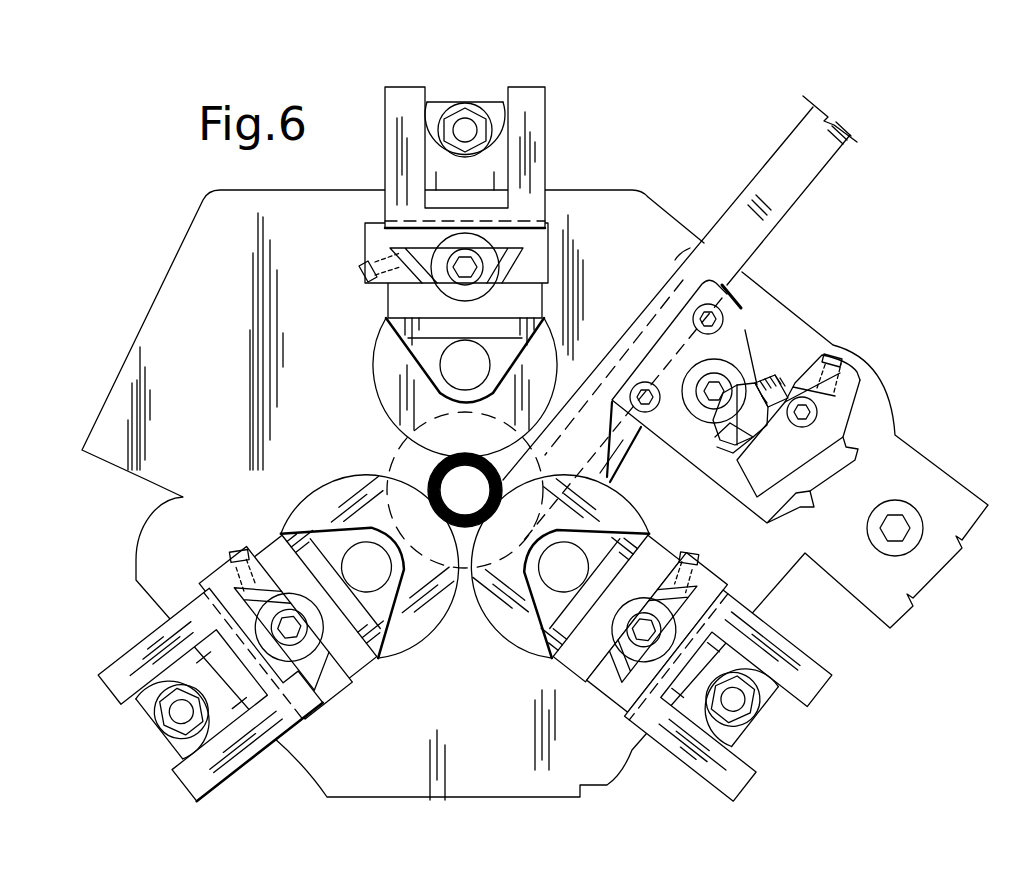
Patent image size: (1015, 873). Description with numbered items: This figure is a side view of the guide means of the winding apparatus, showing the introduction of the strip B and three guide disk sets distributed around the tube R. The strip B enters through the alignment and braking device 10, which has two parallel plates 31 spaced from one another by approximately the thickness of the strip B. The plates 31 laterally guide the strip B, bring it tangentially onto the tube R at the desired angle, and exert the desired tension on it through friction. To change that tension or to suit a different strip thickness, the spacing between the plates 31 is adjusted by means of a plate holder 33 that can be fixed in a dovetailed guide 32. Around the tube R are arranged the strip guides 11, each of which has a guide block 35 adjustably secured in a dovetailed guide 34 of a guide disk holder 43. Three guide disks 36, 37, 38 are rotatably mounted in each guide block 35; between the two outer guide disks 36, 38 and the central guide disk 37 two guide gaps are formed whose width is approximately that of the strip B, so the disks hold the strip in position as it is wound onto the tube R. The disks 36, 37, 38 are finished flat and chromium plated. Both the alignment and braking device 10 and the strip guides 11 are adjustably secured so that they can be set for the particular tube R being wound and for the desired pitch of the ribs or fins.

The alignment and braking device 10 is at (925, 472).
The strip guides 11 is at (535, 152).
The parallel plates 31 is at (658, 290).
The dovetailed guide 32 is at (737, 460).
The plate holder 33 is at (738, 345).
The dovetailed guide 34 is at (363, 570).
The guide block 35 is at (243, 567).
The guide disk 36 is at (417, 620).
The central guide disk 37 is at (384, 553).
The guide disk 38 is at (545, 553).
The guide disk holder 43 is at (275, 633).
The strip B is at (807, 162).
The tube R is at (438, 472).